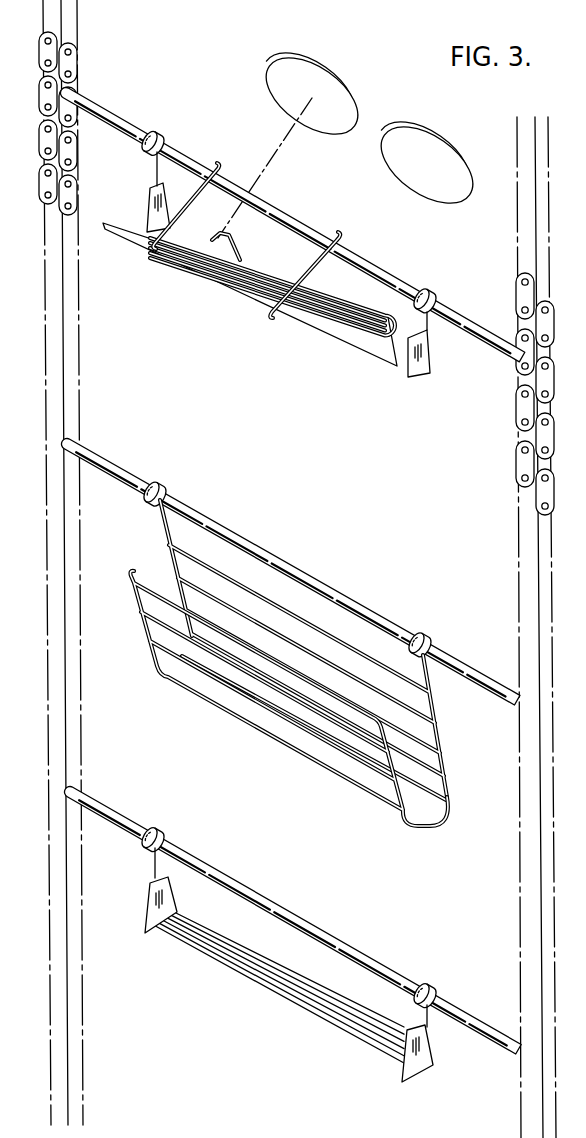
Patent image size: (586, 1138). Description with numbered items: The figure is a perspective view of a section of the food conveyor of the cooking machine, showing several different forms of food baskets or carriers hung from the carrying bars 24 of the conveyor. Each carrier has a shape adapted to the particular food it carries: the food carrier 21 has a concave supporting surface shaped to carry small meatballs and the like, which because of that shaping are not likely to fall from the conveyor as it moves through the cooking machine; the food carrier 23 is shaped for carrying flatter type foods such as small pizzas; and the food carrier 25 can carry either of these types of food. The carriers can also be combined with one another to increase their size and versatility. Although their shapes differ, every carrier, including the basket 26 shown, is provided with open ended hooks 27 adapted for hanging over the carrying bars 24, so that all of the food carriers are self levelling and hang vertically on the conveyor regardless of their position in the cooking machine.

The food carrier 21 is at (423, 1060).
The food carrier 23 is at (422, 364).
The carrying bar 24 is at (101, 107).
The food carrier 25 is at (152, 133).
The wire basket 26 is at (440, 802).
The open ended hook 27 is at (166, 143).